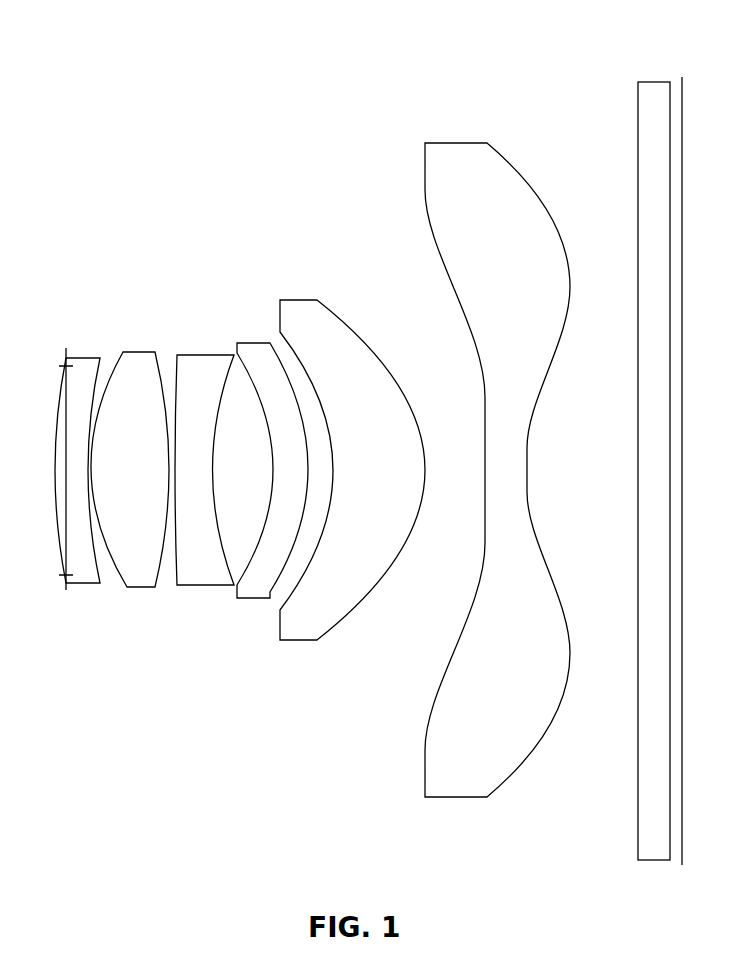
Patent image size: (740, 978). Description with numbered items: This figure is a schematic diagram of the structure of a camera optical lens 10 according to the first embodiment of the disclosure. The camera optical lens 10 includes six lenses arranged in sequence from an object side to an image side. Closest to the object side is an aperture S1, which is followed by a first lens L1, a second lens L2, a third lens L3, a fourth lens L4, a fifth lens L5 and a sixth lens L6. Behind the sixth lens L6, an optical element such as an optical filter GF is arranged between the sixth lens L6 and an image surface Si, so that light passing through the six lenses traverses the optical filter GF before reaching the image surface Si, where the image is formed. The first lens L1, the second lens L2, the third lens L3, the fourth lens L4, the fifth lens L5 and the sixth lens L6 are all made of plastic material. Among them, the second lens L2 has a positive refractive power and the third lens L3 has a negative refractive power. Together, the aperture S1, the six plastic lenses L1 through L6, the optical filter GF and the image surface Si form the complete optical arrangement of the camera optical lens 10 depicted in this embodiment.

The camera optical lens 10 is at (398, 45).
The aperture S1 is at (50, 464).
The first lens L1 is at (77, 456).
The second lens L2 is at (130, 458).
The third lens L3 is at (204, 457).
The fourth lens L4 is at (272, 459).
The fifth lens L5 is at (352, 456).
The sixth lens L6 is at (497, 456).
The optical filter GF is at (654, 458).
The image surface Si is at (677, 460).